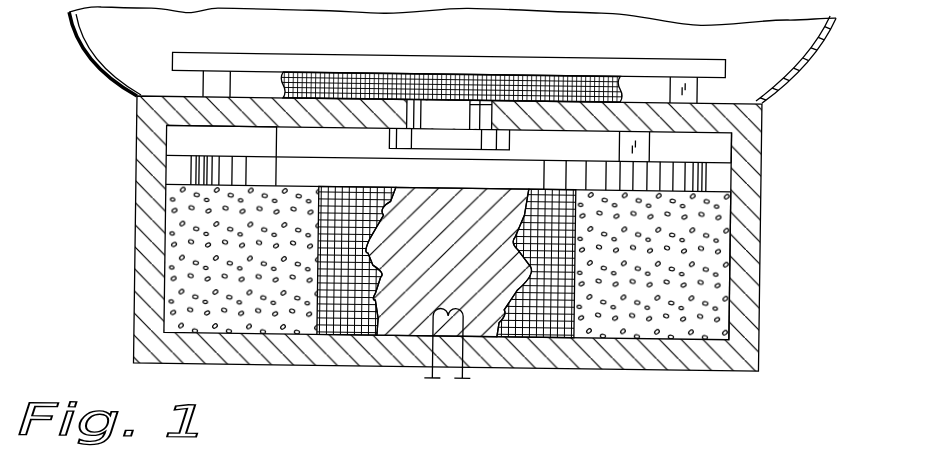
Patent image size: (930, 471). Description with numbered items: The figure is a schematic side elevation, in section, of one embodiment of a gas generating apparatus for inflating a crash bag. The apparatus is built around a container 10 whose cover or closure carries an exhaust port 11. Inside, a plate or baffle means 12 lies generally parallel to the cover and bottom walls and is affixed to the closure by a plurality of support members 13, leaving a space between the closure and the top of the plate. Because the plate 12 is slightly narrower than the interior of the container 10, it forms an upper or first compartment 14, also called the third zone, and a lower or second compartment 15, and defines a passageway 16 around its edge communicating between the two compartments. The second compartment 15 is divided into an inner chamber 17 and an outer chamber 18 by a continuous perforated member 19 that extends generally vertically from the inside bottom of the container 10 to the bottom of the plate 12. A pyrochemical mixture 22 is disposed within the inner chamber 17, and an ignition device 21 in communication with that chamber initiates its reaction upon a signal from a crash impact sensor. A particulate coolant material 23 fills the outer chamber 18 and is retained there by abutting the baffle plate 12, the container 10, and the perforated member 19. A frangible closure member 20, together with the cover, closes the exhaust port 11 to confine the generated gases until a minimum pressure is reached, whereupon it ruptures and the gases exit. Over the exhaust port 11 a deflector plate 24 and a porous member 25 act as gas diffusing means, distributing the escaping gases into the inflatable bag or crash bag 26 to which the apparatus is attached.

The container 10 is at (148, 245).
The exhaust port 11 is at (482, 112).
The plate or baffle means 12 is at (692, 166).
The support members 13 is at (255, 138).
The upper or first compartment 14 is at (717, 142).
The lower or second compartment 15 is at (717, 257).
The passageway 16 is at (178, 164).
The inner chamber or first zone 17 is at (482, 318).
The outer chamber or second zone 18 is at (680, 321).
The continuous perforated member 19 is at (350, 312).
The frangible closure member 20 is at (497, 128).
The ignition device 21 is at (432, 306).
The pyrochemical mixture 22 is at (400, 312).
The particulate coolant material 23 is at (180, 284).
The deflector plate 24 is at (173, 59).
The porous member 25 is at (365, 75).
The inflatable bag or crash bag 26 is at (817, 51).